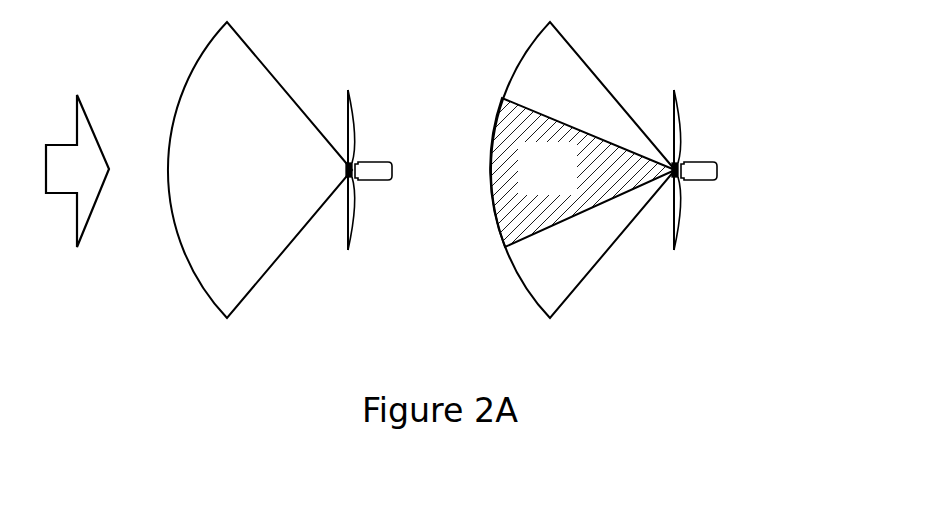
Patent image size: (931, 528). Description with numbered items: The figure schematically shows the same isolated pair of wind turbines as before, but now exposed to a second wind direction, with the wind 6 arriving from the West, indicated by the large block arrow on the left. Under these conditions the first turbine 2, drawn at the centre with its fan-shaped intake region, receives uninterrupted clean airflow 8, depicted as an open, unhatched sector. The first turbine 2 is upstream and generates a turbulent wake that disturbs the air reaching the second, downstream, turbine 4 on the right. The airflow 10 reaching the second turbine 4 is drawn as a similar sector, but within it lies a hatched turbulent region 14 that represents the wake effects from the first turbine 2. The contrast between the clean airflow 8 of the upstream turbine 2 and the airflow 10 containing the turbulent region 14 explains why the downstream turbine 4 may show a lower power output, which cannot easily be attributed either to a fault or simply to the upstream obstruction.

The first turbine 2 is at (370, 171).
The second turbine 4 is at (697, 173).
The wind 6 is at (73, 160).
The clean airflow 8 is at (240, 183).
The airflow 10 is at (543, 91).
The turbulent region 14 is at (532, 183).